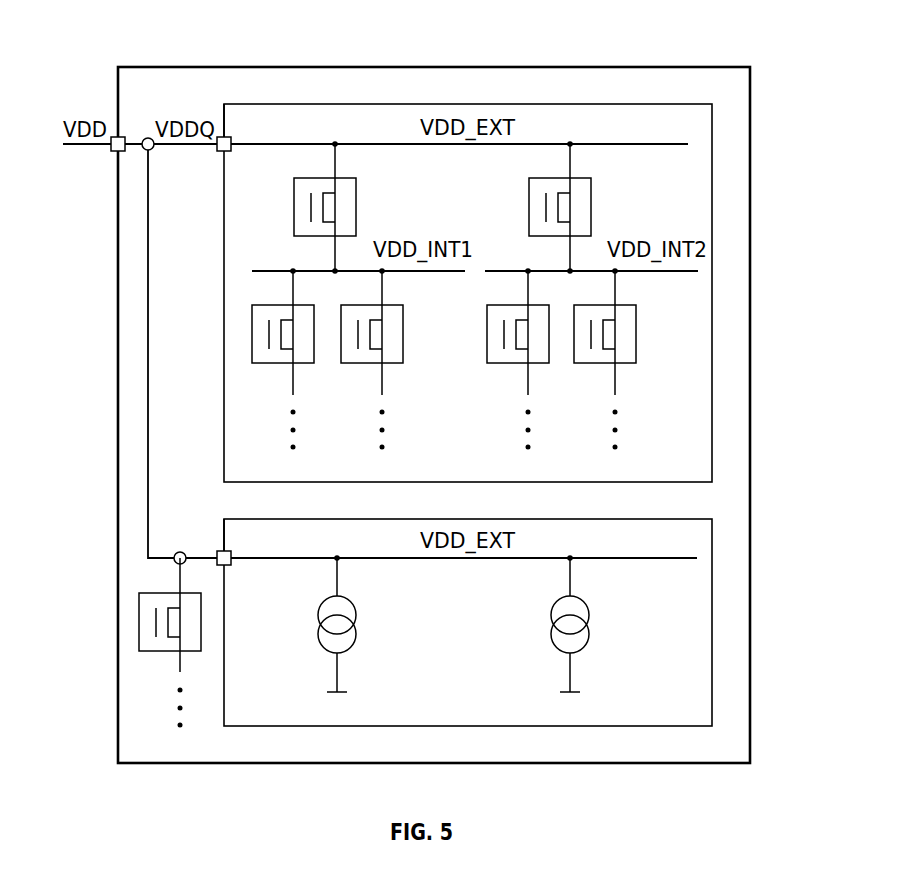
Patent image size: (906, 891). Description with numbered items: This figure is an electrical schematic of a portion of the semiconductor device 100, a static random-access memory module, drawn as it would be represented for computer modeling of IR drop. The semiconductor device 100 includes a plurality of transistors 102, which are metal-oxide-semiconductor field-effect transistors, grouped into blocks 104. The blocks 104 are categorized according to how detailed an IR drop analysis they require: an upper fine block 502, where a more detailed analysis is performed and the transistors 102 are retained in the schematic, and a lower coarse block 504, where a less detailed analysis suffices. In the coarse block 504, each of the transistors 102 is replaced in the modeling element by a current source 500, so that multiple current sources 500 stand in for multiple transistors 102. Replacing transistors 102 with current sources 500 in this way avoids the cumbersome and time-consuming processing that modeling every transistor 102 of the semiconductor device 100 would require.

The semiconductor device 100 is at (723, 66).
The transistors 102 is at (329, 192).
The blocks 104 is at (641, 87).
The current source 500 is at (357, 616).
The fine block 502 is at (685, 104).
The coarse block 504 is at (685, 518).